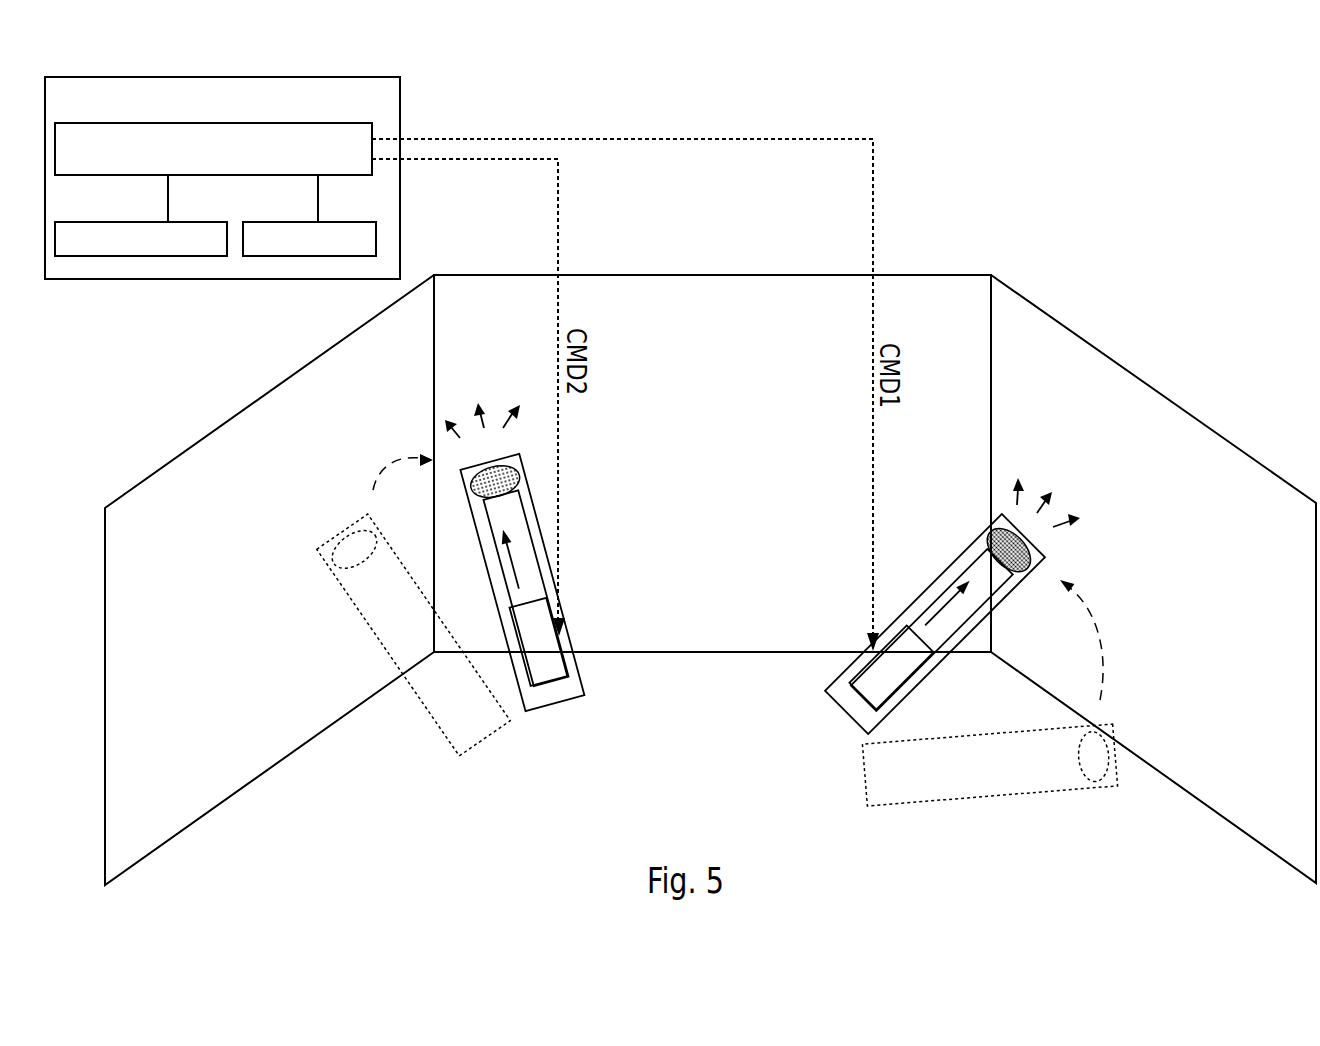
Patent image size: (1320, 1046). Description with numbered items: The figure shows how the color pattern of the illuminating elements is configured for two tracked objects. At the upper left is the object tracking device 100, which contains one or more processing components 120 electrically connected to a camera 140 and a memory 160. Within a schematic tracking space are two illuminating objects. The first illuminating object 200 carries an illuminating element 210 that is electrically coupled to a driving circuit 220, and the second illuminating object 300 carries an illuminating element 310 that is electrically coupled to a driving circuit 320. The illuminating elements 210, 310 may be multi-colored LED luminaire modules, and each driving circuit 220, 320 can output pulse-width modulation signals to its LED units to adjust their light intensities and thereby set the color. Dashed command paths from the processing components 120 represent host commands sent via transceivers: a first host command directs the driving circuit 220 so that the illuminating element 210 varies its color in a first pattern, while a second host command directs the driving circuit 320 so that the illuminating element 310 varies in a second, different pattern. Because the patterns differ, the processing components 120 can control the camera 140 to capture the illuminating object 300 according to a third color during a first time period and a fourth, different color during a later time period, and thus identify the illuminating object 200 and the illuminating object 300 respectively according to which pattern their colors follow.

The object tracking device 100 is at (347, 111).
The processing components 120 is at (352, 161).
The camera 140 is at (365, 251).
The memory 160 is at (200, 251).
The illuminating object 200 is at (941, 622).
The illuminating element 210 is at (1033, 570).
The driving circuit 220 is at (891, 667).
The illuminating object 300 is at (536, 597).
The illuminating element 310 is at (510, 491).
The driving circuit 320 is at (539, 642).